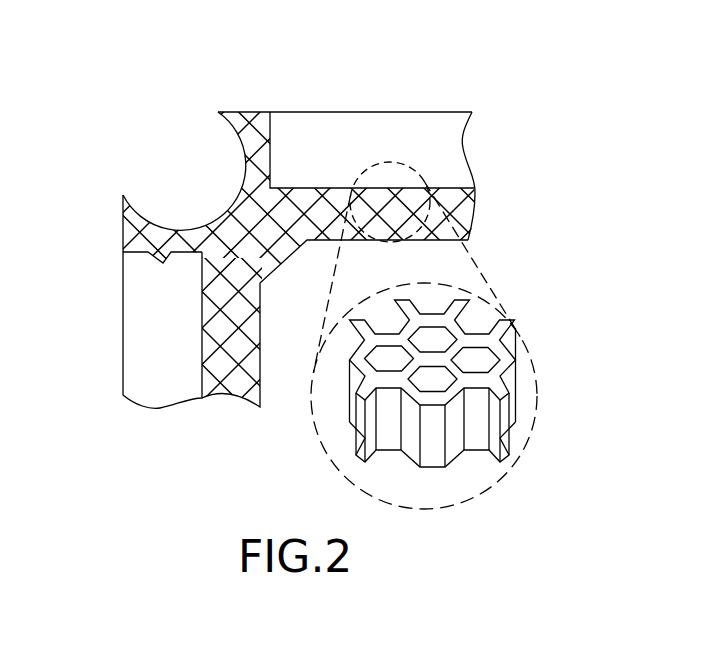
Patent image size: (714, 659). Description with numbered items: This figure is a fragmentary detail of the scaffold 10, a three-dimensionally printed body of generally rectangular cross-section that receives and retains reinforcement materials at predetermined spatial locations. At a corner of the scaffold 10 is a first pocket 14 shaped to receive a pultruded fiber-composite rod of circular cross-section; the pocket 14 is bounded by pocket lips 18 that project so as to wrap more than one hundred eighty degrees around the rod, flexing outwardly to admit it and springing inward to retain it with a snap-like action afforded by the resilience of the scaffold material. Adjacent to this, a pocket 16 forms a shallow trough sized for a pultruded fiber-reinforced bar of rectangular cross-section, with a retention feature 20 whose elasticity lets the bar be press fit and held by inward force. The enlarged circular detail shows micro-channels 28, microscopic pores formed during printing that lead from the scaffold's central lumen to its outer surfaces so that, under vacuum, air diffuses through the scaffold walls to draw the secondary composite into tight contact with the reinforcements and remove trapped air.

The scaffold 10 is at (450, 103).
The first pocket 14 is at (152, 145).
The pocket 16 is at (403, 148).
The pocket lips 18 is at (218, 112).
The retention feature 20 is at (262, 163).
The micro-channels 28 is at (448, 340).